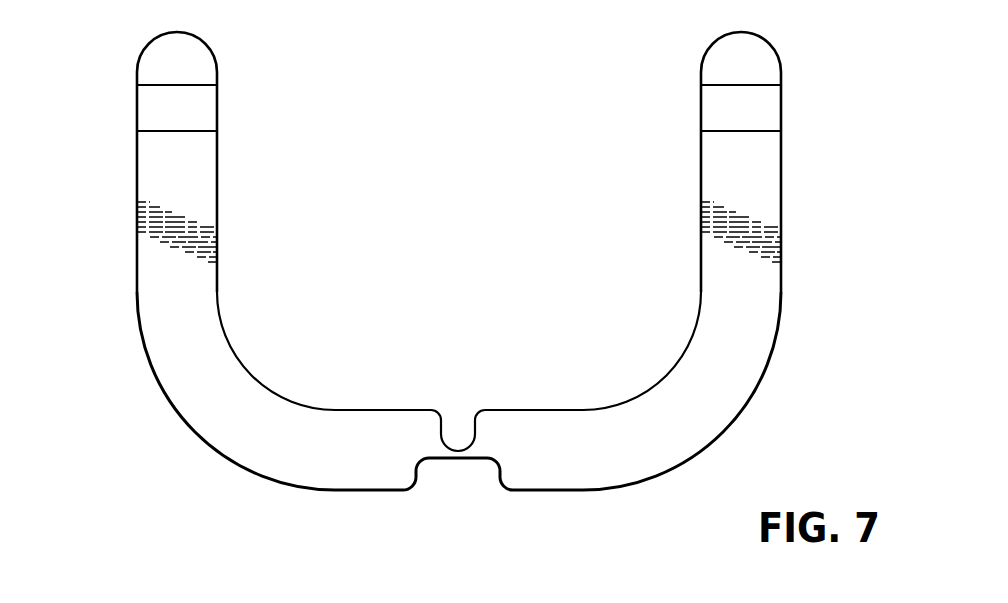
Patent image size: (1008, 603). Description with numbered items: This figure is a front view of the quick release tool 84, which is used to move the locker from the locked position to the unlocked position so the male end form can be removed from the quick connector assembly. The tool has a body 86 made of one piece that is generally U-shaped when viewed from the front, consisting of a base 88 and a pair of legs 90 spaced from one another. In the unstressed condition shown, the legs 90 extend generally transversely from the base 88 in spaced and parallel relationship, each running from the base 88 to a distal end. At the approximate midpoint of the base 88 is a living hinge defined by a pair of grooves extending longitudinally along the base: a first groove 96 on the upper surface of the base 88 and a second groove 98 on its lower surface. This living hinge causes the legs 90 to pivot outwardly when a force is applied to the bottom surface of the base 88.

The quick release tool 84 is at (455, 295).
The body 86 is at (226, 232).
The base 88 is at (590, 462).
The legs 90 is at (145, 278).
The first groove 96 is at (456, 450).
The second groove 98 is at (462, 460).